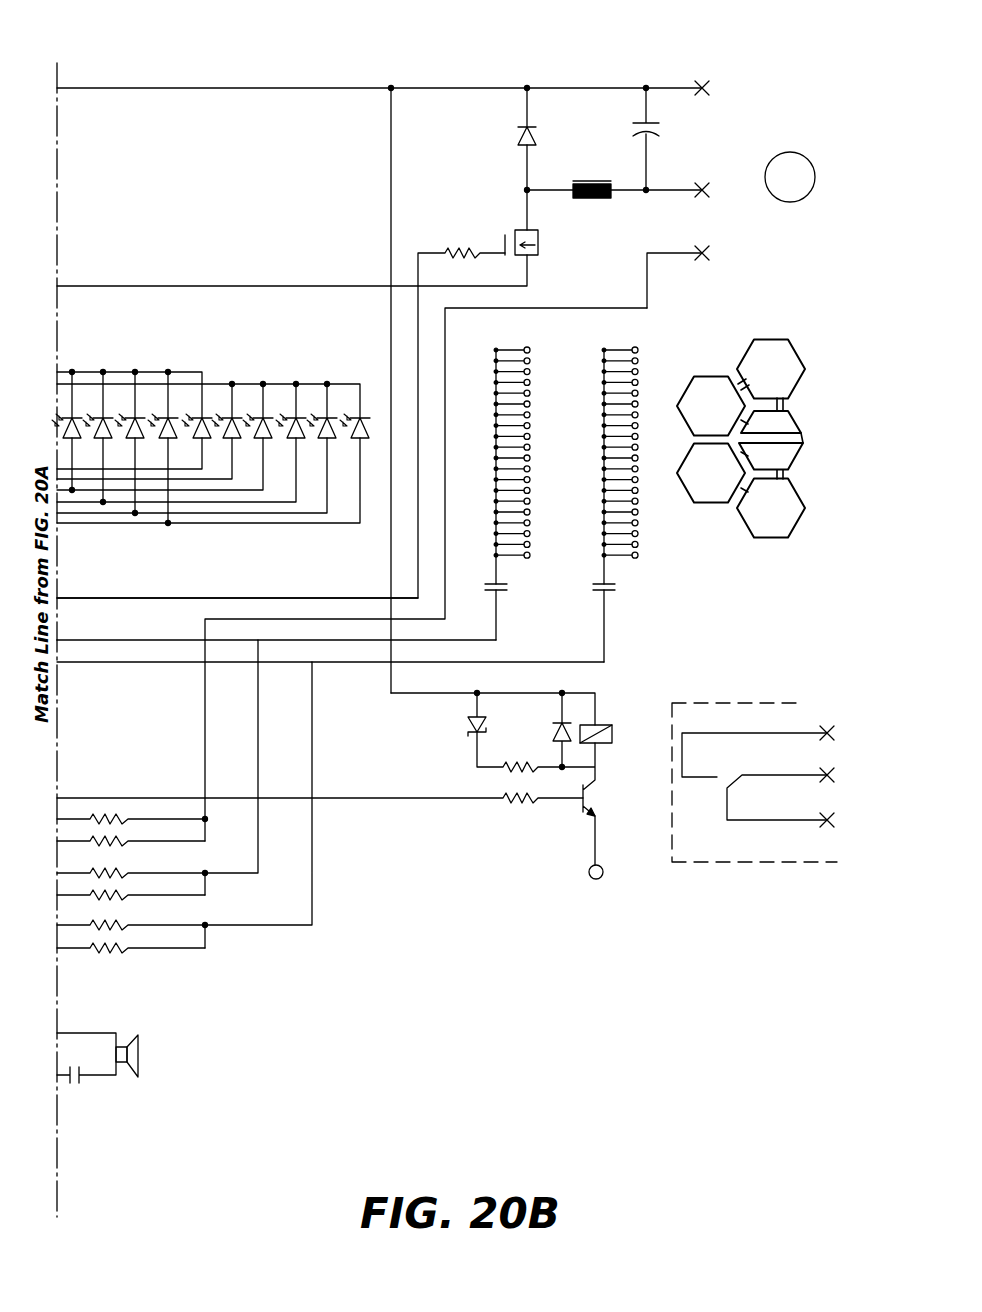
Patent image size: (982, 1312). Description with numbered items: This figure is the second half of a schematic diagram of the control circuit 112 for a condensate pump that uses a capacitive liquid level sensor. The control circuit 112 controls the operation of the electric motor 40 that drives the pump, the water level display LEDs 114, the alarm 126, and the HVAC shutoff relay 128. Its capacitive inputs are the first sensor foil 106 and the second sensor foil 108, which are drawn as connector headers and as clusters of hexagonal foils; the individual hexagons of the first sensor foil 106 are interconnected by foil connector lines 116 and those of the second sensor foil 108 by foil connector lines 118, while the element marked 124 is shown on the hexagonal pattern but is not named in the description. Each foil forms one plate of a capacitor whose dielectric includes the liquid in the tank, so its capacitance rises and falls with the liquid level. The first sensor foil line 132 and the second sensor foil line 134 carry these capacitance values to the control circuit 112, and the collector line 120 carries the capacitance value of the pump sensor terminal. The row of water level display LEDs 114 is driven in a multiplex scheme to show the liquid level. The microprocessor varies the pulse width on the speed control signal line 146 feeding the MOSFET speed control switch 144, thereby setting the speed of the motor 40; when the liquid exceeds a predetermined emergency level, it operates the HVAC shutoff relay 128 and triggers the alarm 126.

The control circuit 112 is at (470, 58).
The electric motor 40 is at (808, 156).
The MOSFET speed control switch 144 is at (517, 229).
The collector line 120 is at (670, 253).
The second sensor foil 108 is at (604, 350).
The first sensor foil 106 is at (497, 350).
The foil connector lines 118 is at (783, 405).
The foil connector lines 116 is at (781, 470).
The hexagonal sensor segment 124 is at (800, 440).
The water level display LEDs 114 is at (240, 357).
The speed control signal line 146 is at (199, 598).
The first sensor foil line 132 is at (498, 570).
The second sensor foil line 134 is at (606, 568).
The HVAC shutoff relay 128 is at (698, 862).
The alarm 126 is at (140, 1052).